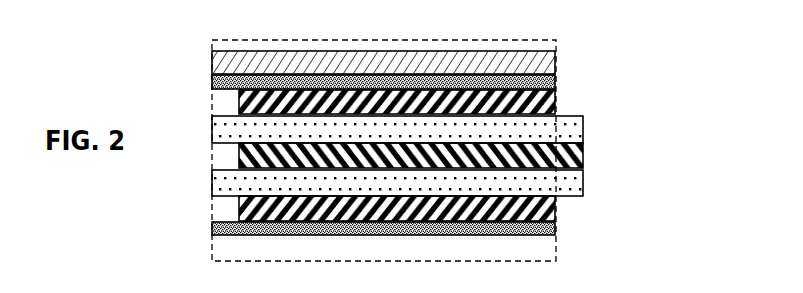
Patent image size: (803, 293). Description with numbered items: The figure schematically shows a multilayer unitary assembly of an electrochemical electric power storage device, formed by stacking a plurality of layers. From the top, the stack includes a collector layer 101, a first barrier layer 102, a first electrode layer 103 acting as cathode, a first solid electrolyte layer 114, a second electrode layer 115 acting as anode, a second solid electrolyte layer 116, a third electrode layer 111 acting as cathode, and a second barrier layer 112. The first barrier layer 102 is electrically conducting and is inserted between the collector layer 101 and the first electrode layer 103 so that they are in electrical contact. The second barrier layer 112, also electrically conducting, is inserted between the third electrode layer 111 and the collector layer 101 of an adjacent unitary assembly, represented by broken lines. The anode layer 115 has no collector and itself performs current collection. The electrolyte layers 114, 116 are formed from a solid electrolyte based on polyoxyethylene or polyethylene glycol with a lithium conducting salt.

The collector layer 101 is at (548, 66).
The first barrier layer 102 is at (548, 84).
The first electrode layer 103 is at (548, 107).
The third electrode layer 111 is at (548, 210).
The second barrier layer 112 is at (556, 40).
The first solid electrolyte layer 114 is at (576, 133).
The second electrode layer 115 is at (580, 156).
The second solid electrolyte layer 116 is at (575, 183).